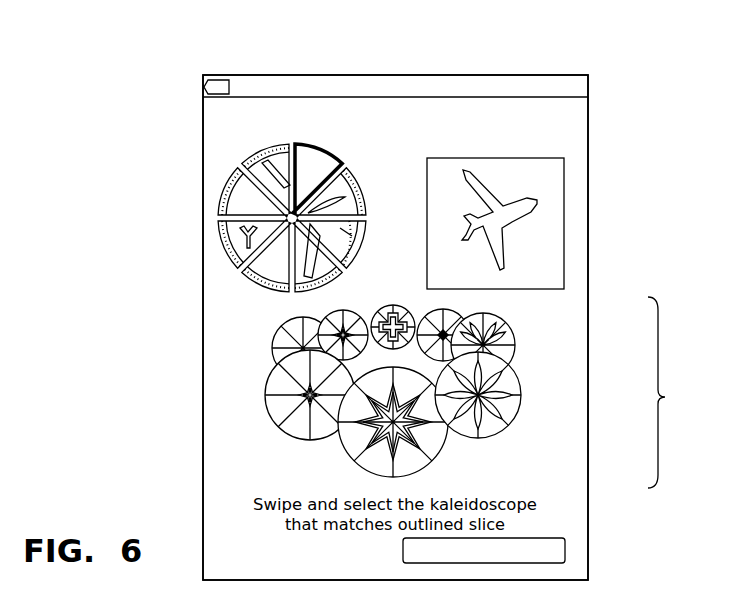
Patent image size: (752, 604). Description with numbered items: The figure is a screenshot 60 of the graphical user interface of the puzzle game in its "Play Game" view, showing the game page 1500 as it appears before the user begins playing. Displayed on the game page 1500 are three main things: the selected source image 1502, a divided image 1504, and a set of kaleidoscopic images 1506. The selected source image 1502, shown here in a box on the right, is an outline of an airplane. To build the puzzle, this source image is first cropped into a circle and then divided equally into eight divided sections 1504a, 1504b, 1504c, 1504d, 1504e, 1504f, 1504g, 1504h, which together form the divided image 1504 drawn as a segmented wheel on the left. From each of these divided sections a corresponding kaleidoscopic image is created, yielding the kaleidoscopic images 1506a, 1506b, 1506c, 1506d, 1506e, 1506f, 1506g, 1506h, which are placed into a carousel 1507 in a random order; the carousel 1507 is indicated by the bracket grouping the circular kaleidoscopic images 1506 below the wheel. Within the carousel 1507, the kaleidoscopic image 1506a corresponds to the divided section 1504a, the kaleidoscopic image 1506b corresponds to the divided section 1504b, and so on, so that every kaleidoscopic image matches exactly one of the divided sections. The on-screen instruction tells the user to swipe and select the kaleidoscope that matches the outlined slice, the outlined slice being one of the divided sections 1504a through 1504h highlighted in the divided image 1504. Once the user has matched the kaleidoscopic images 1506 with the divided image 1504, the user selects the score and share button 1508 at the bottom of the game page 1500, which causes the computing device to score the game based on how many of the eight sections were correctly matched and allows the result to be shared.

The screenshot 60 is at (510, 83).
The game page 1500 is at (560, 128).
The selected source image 1502 is at (565, 234).
The divided image 1504 is at (273, 187).
The divided section 1504a is at (318, 163).
The divided section 1504b is at (365, 190).
The divided section 1504c is at (357, 260).
The divided section 1504d is at (318, 287).
The divided section 1504e is at (268, 272).
The divided section 1504f is at (220, 234).
The divided section 1504g is at (220, 198).
The divided section 1504h is at (248, 167).
The kaleidoscopic images 1506 is at (337, 392).
The kaleidoscopic image 1506a is at (330, 314).
The kaleidoscopic image 1506b is at (512, 418).
The kaleidoscopic image 1506c is at (275, 345).
The kaleidoscopic image 1506d is at (400, 306).
The kaleidoscopic image 1506e is at (440, 310).
The kaleidoscopic image 1506f is at (430, 466).
The kaleidoscopic image 1506g is at (265, 410).
The kaleidoscopic image 1506h is at (515, 345).
The carousel 1507 is at (686, 392).
The score and share button 1508 is at (565, 548).